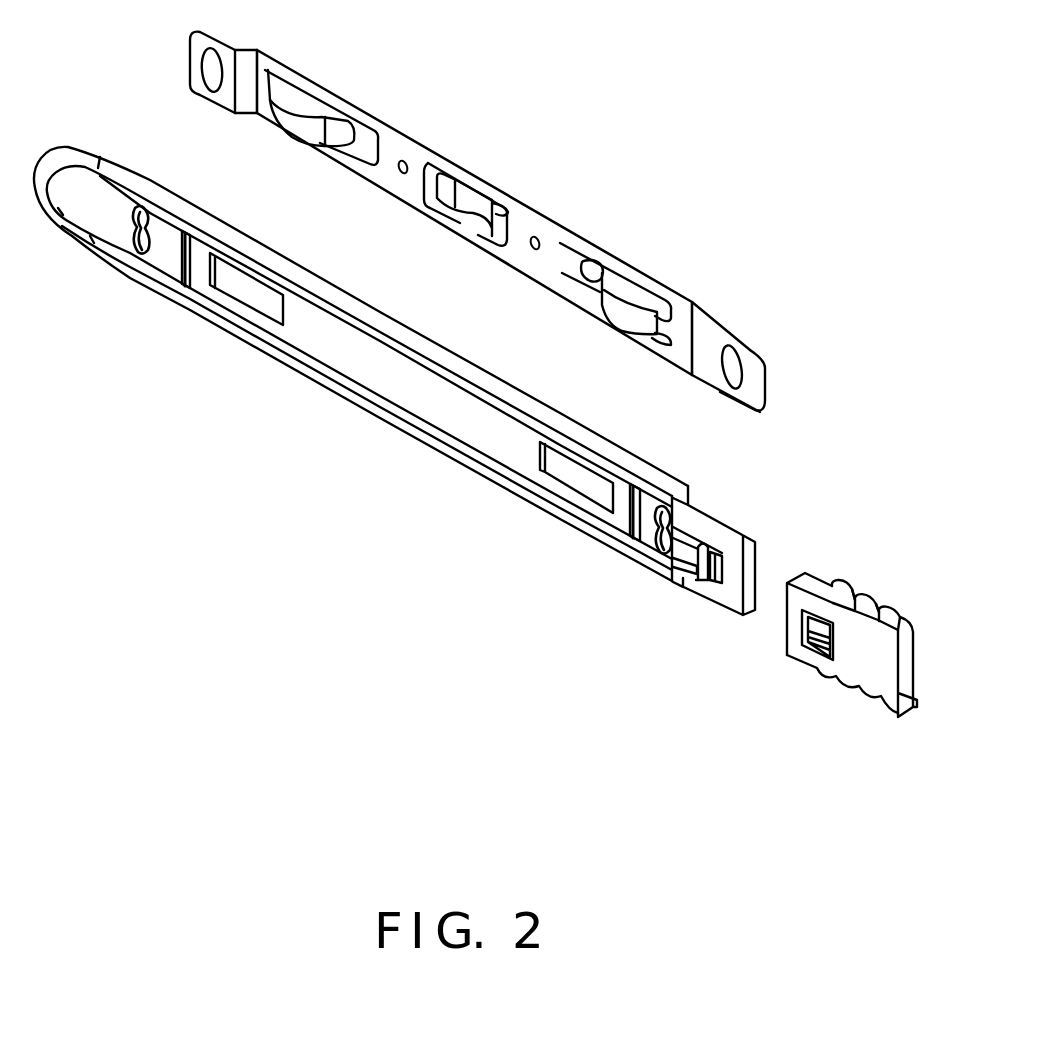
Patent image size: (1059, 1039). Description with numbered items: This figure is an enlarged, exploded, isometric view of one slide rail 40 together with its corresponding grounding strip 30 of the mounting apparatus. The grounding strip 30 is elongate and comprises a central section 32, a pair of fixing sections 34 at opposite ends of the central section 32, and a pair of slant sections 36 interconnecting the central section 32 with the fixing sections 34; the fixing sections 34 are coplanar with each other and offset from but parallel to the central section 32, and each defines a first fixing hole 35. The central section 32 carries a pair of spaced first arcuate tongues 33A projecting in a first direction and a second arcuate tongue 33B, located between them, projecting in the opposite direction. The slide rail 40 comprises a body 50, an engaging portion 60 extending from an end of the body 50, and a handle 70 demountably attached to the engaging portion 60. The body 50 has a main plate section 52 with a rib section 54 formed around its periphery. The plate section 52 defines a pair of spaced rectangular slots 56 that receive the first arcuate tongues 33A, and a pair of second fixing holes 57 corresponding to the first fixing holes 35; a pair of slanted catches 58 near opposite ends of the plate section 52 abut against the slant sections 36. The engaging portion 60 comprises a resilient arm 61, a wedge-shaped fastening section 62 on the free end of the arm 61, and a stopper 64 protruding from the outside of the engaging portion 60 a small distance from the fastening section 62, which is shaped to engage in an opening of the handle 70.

The grounding strip 30 is at (472, 208).
The central section 32 is at (552, 235).
The first arcuate tongue 33A is at (298, 128).
The second arcuate tongue 33B is at (478, 200).
The fixing section 34 is at (230, 100).
The first fixing hole 35 is at (205, 70).
The slant section 36 is at (247, 62).
The slide rail 40 is at (475, 473).
The body 50 is at (361, 405).
The main plate section 52 is at (310, 335).
The rib section 54 is at (368, 400).
The rectangular slot 56 is at (255, 290).
The second fixing hole 57 is at (647, 662).
The slanted catch 58 is at (180, 285).
The engaging portion 60 is at (746, 596).
The resilient arm 61 is at (685, 552).
The fastening section 62 is at (703, 560).
The stopper 64 is at (720, 568).
The handle 70 is at (842, 681).